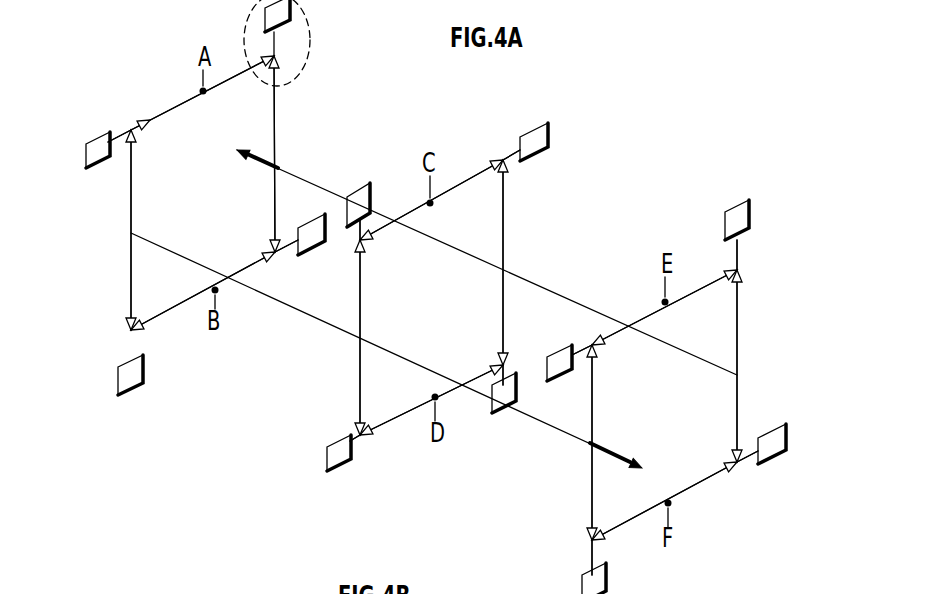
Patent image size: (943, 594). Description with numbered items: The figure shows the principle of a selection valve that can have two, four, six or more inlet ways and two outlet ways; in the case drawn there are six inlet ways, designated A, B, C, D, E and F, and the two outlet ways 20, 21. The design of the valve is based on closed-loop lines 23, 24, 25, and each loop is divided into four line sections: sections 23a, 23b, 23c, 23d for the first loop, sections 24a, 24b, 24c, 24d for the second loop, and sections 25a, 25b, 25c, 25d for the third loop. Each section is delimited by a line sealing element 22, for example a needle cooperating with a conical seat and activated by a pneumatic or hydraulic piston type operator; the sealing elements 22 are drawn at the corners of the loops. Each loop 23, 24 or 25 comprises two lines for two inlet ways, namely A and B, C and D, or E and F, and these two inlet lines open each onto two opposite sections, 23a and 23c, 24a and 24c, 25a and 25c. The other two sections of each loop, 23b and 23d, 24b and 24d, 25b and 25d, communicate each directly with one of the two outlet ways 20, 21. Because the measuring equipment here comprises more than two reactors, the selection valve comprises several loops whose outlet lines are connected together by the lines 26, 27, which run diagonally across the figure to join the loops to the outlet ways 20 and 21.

The outlet way 20 is at (258, 151).
The outlet way 21 is at (612, 457).
The line sealing element 22 is at (250, 43).
The closed-loop line 23 is at (105, 252).
The line section 23a is at (182, 105).
The line section 23b is at (132, 203).
The line section 23c is at (177, 312).
The line section 23d is at (277, 117).
The closed-loop line 24 is at (514, 212).
The line section 24a is at (455, 182).
The line section 24b is at (358, 312).
The line section 24c is at (410, 418).
The line section 24d is at (507, 270).
The closed-loop line 25 is at (752, 302).
The line section 25a is at (688, 287).
The line section 25b is at (592, 497).
The line section 25c is at (687, 497).
The line section 25d is at (738, 397).
The connecting line 26 is at (283, 307).
The connecting line 27 is at (323, 185).